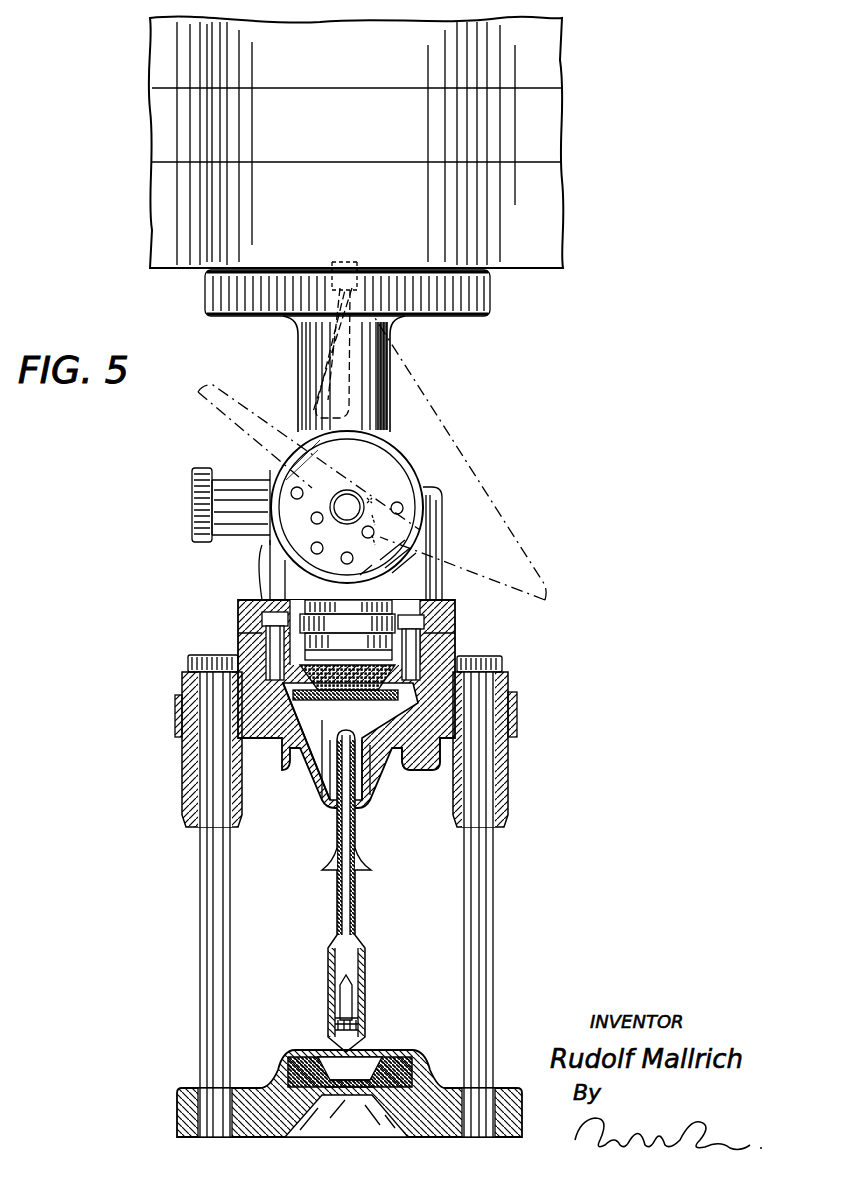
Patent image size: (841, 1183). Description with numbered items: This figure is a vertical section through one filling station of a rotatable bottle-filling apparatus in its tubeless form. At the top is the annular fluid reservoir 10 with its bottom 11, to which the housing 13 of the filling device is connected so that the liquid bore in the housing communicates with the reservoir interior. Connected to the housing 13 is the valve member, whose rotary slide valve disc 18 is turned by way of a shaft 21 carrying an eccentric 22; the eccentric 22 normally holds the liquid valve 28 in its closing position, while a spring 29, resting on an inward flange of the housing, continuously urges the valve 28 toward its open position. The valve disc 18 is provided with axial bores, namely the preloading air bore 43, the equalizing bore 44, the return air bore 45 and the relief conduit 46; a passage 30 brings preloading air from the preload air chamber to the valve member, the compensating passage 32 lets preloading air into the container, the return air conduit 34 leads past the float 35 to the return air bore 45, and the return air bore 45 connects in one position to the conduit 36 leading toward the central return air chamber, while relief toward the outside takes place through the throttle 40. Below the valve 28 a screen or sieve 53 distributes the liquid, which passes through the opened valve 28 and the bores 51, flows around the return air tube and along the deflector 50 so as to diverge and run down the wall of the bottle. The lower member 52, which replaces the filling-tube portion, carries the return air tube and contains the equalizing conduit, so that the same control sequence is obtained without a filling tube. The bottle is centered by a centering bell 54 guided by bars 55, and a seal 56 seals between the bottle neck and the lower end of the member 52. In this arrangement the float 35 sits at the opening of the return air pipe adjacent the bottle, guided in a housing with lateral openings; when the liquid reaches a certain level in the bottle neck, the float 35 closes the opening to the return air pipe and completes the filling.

The fluid reservoir 10 is at (546, 67).
The bottom 11 is at (538, 205).
The housing 13 is at (385, 375).
The rotary slide valve disc 18 is at (378, 458).
The shaft 21 is at (342, 490).
The eccentric 22 is at (360, 470).
The valve 28 is at (420, 662).
The spring 29 is at (275, 594).
The passage 30 is at (320, 356).
The passage 32 is at (297, 722).
The conduit 34 is at (372, 782).
The float 35 is at (363, 991).
The conduit 36 is at (403, 508).
The throttle 40 is at (192, 487).
The preloading air bore 43 is at (311, 550).
The equalizing bore 44 is at (353, 558).
The return air bore 45 is at (374, 532).
The relief conduit 46 is at (292, 493).
The deflector 50 is at (371, 866).
The bores 51 is at (325, 745).
The member 52 is at (413, 772).
The screen or sieve 53 is at (416, 742).
The centering bell 54 is at (250, 1097).
The bars 55 is at (200, 897).
The seal 56 is at (420, 1060).